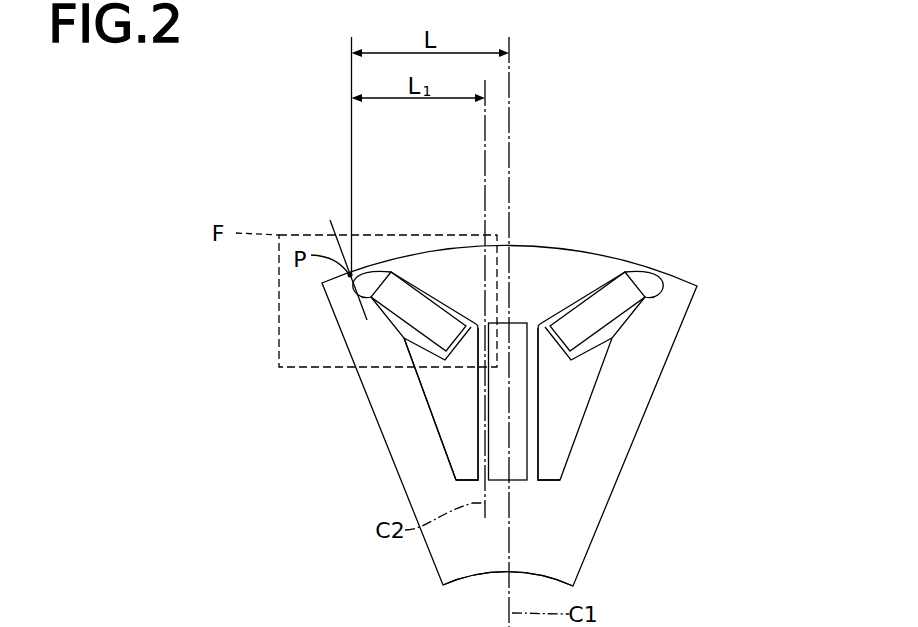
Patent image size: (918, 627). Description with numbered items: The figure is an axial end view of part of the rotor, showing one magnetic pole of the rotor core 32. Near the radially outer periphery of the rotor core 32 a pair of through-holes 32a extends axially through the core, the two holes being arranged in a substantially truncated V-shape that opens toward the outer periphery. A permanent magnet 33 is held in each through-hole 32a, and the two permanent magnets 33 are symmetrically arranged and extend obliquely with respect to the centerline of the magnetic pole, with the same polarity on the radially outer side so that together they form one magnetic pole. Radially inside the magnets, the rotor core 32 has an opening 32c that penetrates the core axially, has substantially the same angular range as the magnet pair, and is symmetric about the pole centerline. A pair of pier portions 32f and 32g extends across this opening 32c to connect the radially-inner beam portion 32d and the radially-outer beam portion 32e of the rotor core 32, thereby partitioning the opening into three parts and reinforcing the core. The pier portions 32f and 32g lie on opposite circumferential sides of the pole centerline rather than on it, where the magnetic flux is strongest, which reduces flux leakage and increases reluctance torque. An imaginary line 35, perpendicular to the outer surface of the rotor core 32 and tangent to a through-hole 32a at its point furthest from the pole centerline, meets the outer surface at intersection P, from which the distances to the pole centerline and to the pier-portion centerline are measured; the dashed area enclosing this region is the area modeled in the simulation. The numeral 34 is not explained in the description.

The rotor core 32 is at (332, 306).
The through-hole 32a is at (360, 296).
The opening 32c is at (418, 375).
The radially-inner beam portion 32d is at (522, 503).
The radially-outer beam portion 32e is at (525, 290).
The pier portion 32f is at (478, 452).
The pier portion 32g is at (538, 435).
The permanent magnet 33 is at (424, 291).
The pole center line 34 is at (530, 152).
The imaginary line 35 is at (353, 293).